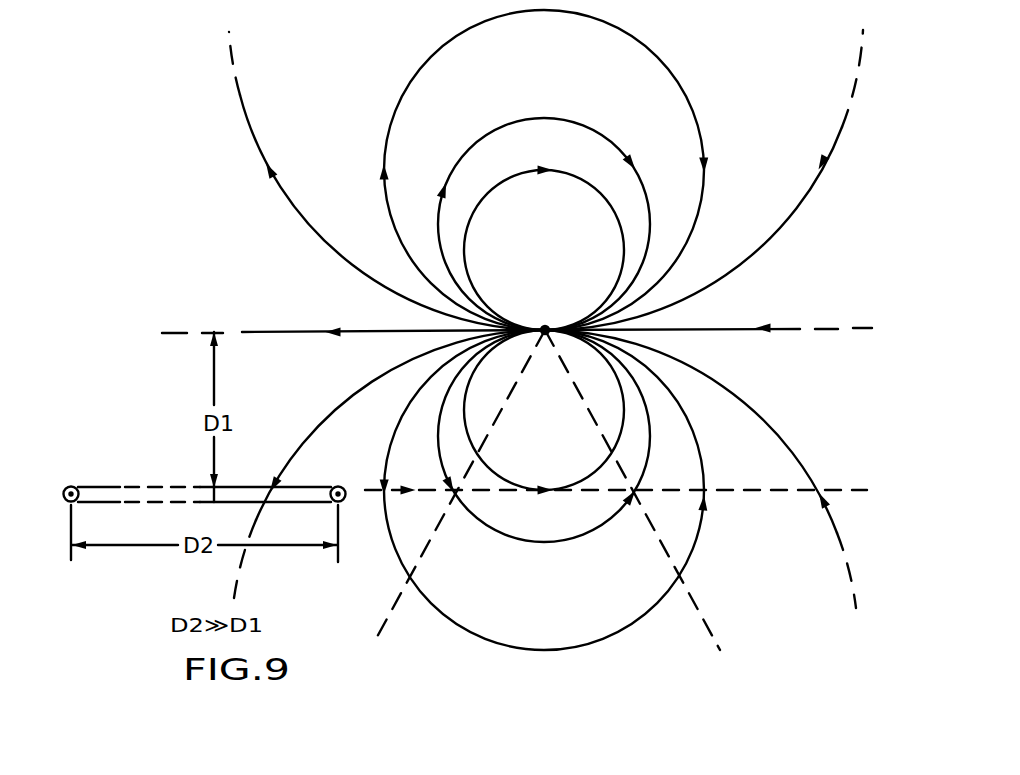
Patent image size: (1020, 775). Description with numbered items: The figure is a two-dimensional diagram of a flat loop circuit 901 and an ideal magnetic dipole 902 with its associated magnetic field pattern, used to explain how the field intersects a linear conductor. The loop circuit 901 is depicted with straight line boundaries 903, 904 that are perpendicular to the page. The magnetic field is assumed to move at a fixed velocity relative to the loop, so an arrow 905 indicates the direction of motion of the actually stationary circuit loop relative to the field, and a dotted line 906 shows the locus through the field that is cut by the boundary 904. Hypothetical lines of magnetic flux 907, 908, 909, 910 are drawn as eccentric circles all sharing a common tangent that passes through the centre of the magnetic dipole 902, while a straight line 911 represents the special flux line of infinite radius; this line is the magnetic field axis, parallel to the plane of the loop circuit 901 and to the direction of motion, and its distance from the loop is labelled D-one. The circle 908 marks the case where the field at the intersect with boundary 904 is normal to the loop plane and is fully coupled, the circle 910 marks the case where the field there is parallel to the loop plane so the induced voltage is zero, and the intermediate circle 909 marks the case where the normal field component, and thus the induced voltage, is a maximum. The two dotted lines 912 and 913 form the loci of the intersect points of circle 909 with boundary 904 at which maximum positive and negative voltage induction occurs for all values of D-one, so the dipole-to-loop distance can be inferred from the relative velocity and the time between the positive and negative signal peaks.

The loop circuit 901 is at (100, 486).
The ideal magnetic dipole 902 is at (546, 325).
The straight line boundary 903 is at (68, 486).
The straight line boundary 904 is at (330, 502).
The arrow 905 is at (365, 490).
The dotted line 906 is at (772, 489).
The line of magnetic flux 907 is at (772, 425).
The circle 908 is at (492, 642).
The circle 909 is at (557, 543).
The circle 910 is at (580, 480).
The straight line 911 is at (718, 328).
The dotted line 912 is at (383, 635).
The dotted line 913 is at (706, 623).